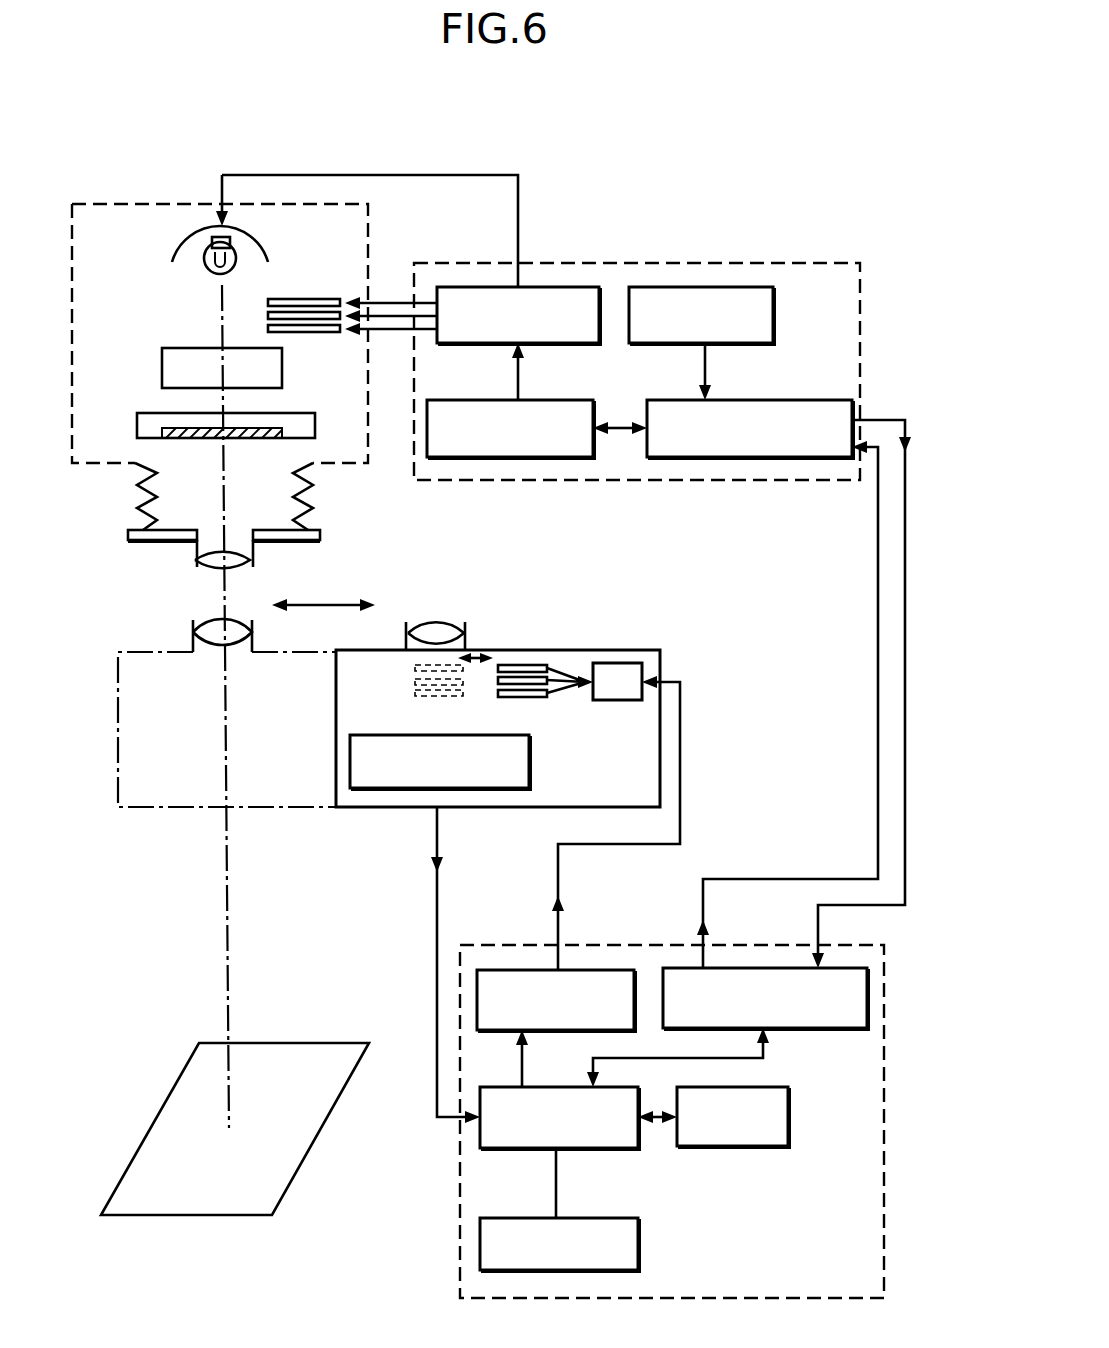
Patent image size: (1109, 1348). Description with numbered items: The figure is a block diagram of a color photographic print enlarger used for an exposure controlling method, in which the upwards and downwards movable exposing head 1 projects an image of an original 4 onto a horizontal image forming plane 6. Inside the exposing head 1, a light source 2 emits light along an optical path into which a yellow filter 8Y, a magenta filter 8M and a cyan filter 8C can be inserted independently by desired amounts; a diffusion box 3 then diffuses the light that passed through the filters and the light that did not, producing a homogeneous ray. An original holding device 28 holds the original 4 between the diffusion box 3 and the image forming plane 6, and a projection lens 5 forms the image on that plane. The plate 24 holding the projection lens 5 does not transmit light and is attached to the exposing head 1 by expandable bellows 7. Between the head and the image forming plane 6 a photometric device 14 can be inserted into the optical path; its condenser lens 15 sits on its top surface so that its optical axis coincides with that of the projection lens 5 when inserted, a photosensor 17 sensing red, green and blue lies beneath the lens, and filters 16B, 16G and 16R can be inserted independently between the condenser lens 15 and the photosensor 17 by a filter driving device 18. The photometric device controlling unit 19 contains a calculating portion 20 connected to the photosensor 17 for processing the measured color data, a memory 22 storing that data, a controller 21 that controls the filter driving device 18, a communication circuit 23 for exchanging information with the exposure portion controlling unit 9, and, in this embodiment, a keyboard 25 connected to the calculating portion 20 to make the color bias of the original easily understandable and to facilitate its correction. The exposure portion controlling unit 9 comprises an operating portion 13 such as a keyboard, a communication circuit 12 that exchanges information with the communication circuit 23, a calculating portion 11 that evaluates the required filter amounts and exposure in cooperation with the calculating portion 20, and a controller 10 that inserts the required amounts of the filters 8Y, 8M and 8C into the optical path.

The exposing head 1 is at (98, 204).
The light source 2 is at (233, 257).
The diffusion box 3 is at (172, 348).
The original 4 is at (267, 428).
The projection lens 5 is at (230, 568).
The image forming plane 6 is at (293, 1043).
The expandable bellows 7 is at (307, 502).
The yellow filter 8Y is at (320, 298).
The magenta filter 8M is at (268, 315).
The cyan filter 8C is at (327, 333).
The exposure portion controlling unit 9 is at (600, 263).
The controller 10 is at (557, 343).
The calculating portion 11 is at (465, 400).
The communication circuit 12 is at (658, 400).
The operating portion 13 is at (755, 343).
The photometric device 14 is at (600, 650).
The condenser lens 15 is at (437, 618).
The red filter 16R is at (527, 665).
The green filter 16G is at (497, 680).
The blue filter 16B is at (537, 697).
The photosensor 17 is at (529, 787).
The filter driving device 18 is at (632, 700).
The photometric device controlling unit 19 is at (612, 945).
The calculating portion 20 is at (610, 1148).
The controller 21 is at (558, 1030).
The memory 22 is at (758, 1146).
The communication circuit 23 is at (843, 1028).
The plate 24 is at (300, 540).
The keyboard 25 is at (638, 1252).
The original holding device 28 is at (138, 413).